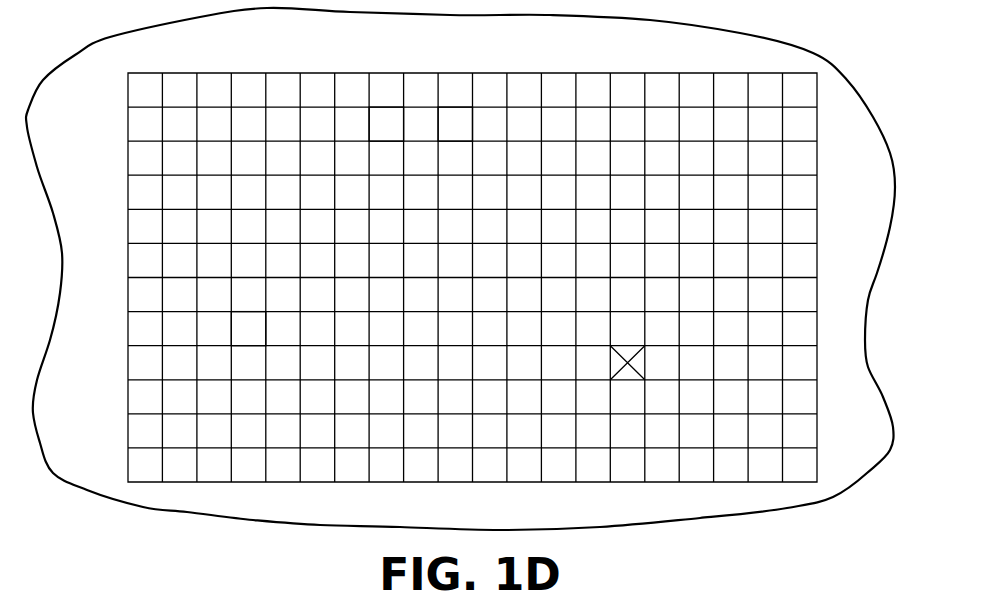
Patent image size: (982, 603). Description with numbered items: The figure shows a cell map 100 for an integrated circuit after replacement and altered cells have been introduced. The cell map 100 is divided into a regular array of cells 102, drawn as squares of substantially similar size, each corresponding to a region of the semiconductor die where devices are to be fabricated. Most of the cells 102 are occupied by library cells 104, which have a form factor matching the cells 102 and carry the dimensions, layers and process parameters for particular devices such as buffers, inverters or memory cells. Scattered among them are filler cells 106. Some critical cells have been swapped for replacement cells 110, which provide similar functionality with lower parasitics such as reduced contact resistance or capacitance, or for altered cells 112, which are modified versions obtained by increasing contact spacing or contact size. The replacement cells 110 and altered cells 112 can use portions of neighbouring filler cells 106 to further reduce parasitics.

The cell map 100 is at (185, 511).
The cells 102 is at (114, 32).
The library cells 104 is at (283, 50).
The filler cells 106 is at (465, 96).
The replacement cells 110 is at (392, 104).
The altered cells 112 is at (237, 317).